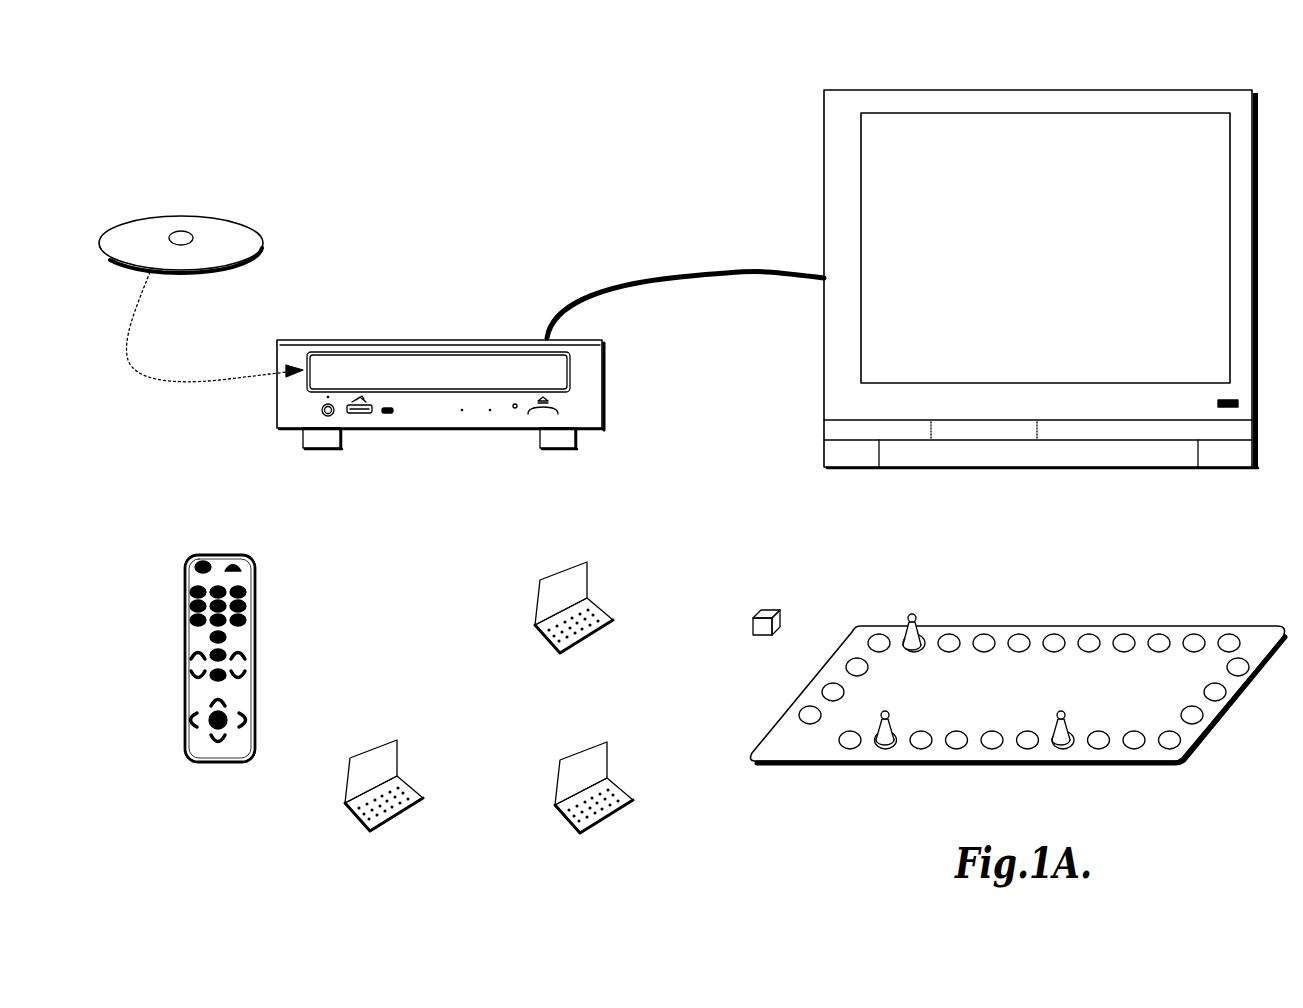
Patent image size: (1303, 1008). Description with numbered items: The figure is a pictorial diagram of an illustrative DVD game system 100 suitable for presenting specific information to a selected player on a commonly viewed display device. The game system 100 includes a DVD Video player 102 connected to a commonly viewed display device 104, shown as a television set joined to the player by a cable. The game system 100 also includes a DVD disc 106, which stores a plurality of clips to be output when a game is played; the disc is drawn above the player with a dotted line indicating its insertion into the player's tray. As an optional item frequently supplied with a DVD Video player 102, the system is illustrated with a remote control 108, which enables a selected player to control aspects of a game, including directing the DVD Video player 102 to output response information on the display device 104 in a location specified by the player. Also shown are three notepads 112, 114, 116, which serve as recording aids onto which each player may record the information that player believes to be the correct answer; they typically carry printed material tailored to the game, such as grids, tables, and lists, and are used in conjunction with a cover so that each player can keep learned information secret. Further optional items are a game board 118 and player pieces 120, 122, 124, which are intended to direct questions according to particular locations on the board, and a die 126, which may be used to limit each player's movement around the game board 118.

The game system 100 is at (376, 120).
The DVD Video player 102 is at (440, 340).
The display device 104 is at (1031, 90).
The DVD disc 106 is at (207, 215).
The remote control 108 is at (255, 627).
The notepad 112 is at (560, 565).
The notepad 114 is at (372, 735).
The notepad 116 is at (580, 737).
The game board 118 is at (1173, 625).
The player piece 120 is at (913, 615).
The player piece 122 is at (883, 712).
The player piece 124 is at (1062, 710).
The die 126 is at (780, 612).